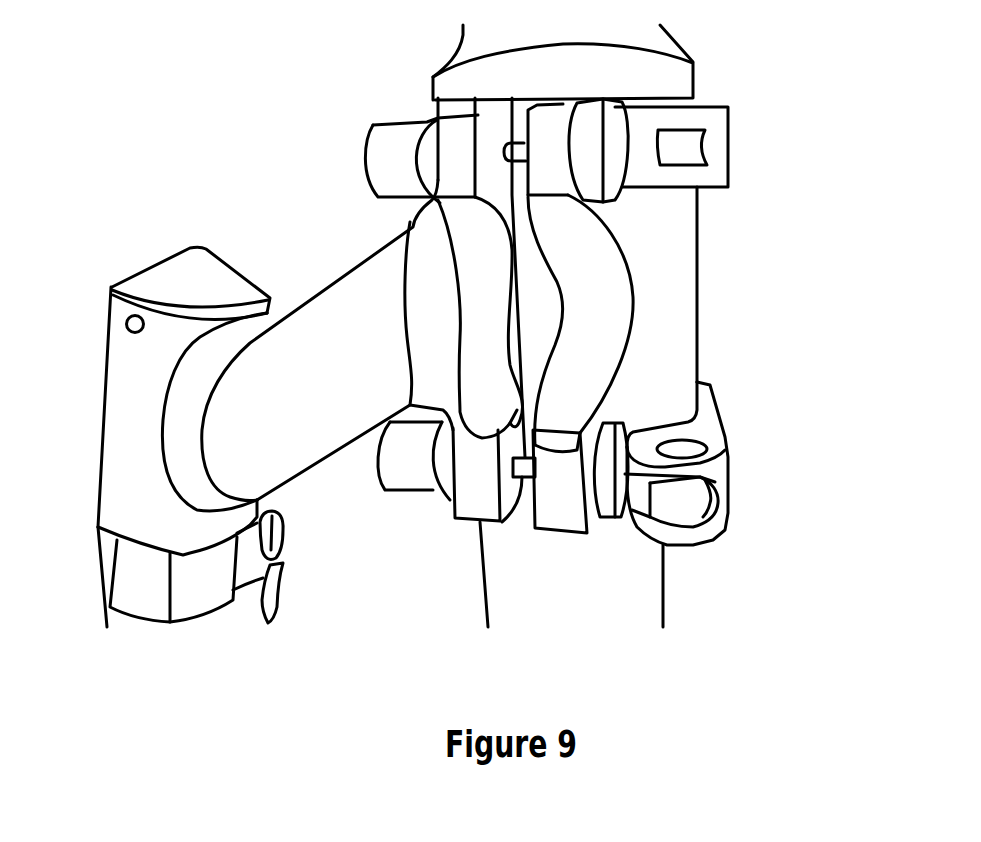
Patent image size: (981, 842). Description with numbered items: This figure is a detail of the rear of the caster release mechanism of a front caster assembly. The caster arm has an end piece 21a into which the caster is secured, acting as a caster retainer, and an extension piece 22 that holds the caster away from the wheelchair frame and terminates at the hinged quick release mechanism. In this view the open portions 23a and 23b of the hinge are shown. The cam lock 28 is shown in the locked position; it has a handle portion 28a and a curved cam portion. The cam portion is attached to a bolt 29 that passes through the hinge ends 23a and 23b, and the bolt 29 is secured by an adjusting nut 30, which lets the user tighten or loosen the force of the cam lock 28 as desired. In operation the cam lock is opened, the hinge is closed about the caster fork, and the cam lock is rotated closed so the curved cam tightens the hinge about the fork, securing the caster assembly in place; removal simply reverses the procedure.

The end piece 21a is at (125, 362).
The extension piece 22 is at (338, 313).
The open portion of the hinge 23a is at (567, 517).
The open portion of the hinge 23b is at (473, 517).
The cam lock 28 is at (710, 165).
The handle portion 28a is at (723, 457).
The bolt 29 is at (513, 205).
The adjusting nut 30 is at (392, 150).